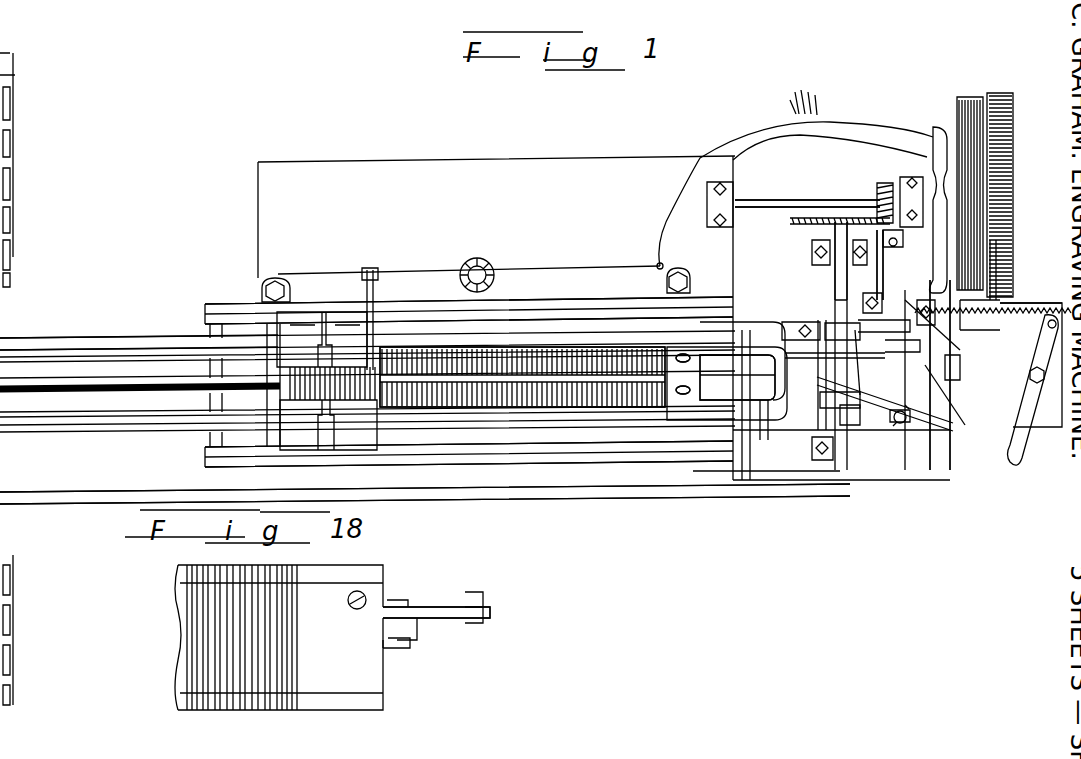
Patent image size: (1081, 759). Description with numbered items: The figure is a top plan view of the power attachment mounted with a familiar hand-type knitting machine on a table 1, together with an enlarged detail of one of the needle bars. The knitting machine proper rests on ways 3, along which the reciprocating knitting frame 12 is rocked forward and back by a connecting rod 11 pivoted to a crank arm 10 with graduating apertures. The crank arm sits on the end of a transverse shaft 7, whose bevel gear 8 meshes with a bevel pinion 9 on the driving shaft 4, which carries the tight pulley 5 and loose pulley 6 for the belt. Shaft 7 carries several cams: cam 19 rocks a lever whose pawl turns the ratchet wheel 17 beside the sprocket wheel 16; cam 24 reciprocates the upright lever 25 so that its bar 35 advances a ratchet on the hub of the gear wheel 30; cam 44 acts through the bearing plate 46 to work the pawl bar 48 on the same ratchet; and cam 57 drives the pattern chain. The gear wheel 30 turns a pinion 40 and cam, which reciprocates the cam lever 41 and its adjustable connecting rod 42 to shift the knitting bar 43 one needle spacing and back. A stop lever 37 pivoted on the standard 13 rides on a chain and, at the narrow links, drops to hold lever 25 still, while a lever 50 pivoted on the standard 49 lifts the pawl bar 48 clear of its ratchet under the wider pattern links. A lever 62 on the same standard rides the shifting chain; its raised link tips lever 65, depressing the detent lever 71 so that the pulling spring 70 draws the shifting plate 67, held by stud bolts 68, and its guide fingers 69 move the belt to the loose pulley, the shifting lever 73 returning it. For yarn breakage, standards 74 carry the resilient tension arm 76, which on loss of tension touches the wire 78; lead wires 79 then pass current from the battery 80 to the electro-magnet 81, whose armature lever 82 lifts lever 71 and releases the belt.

In FIG. 1, the table 1 is at (513, 178).
In FIG. 1, the ways 3 is at (567, 447).
In FIG. 1, the driving shaft 4 is at (768, 203).
In FIG. 1, the tight pulley 5 is at (1005, 148).
In FIG. 1, the loose pulley 6 is at (968, 128).
In FIG. 1, the shaft 7 is at (810, 243).
In FIG. 1, the bevel gear 8 is at (827, 217).
In FIG. 1, the bevel pinion 9 is at (882, 183).
In FIG. 1, the crank arm 10 is at (768, 360).
In FIG. 1, the connecting rod 11 is at (483, 493).
In FIG. 1, the knitting frame 12 is at (37, 422).
In FIG. 1, the standard 13 is at (898, 238).
In FIG. 1, the sprocket wheel 16 is at (972, 318).
In FIG. 1, the ratchet wheel 17 is at (905, 300).
In FIG. 1, the cam 19 is at (847, 273).
In FIG. 1, the cam 24 is at (862, 395).
In FIG. 1, the upright lever 25 is at (915, 330).
In FIG. 1, the gear wheel 30 is at (780, 365).
In FIG. 1, the bar 35 is at (953, 413).
In FIG. 1, the stop lever 37 is at (880, 262).
In FIG. 1, the pinion 40 is at (735, 160).
In FIG. 18, the cam lever 41 is at (488, 607).
In FIG. 1, the connecting rod 42 is at (662, 392).
In FIG. 18, the connecting rod 42 is at (445, 610).
In FIG. 1, the knitting bar 43 is at (640, 355).
In FIG. 18, the knitting bar 43 is at (358, 675).
In FIG. 1, the cam 44 is at (855, 400).
In FIG. 1, the bearing plate 46 is at (898, 420).
In FIG. 1, the pawl bar 48 is at (818, 420).
In FIG. 1, the standard 49 is at (695, 378).
In FIG. 1, the lever 50 is at (725, 352).
In FIG. 1, the cam 57 is at (850, 417).
In FIG. 1, the lever 62 is at (750, 358).
In FIG. 1, the lever 65 is at (950, 430).
In FIG. 1, the shifting plate 67 is at (1003, 302).
In FIG. 1, the stud bolts 68 is at (1012, 365).
In FIG. 1, the guide fingers 69 is at (1007, 273).
In FIG. 1, the pulling spring 70 is at (992, 275).
In FIG. 1, the lever 71 is at (950, 440).
In FIG. 1, the shifting lever 73 is at (1035, 415).
In FIG. 1, the standards 74 is at (272, 276).
In FIG. 1, the tension arm 76 is at (367, 300).
In FIG. 1, the metallic rod or wire 78 is at (315, 272).
In FIG. 1, the lead wires 79 is at (698, 168).
In FIG. 1, the battery 80 is at (794, 94).
In FIG. 1, the electro-magnet 81 is at (930, 170).
In FIG. 1, the lever 82 is at (940, 178).